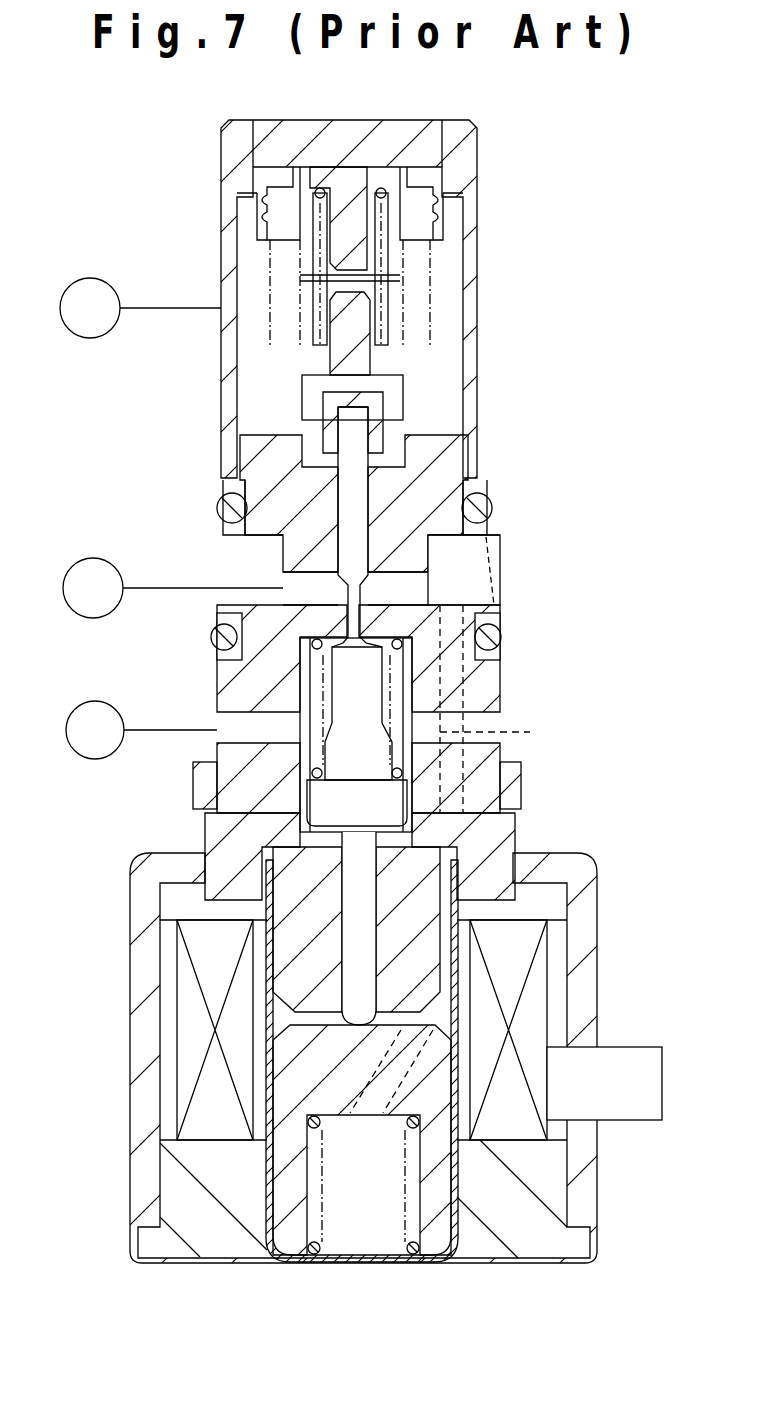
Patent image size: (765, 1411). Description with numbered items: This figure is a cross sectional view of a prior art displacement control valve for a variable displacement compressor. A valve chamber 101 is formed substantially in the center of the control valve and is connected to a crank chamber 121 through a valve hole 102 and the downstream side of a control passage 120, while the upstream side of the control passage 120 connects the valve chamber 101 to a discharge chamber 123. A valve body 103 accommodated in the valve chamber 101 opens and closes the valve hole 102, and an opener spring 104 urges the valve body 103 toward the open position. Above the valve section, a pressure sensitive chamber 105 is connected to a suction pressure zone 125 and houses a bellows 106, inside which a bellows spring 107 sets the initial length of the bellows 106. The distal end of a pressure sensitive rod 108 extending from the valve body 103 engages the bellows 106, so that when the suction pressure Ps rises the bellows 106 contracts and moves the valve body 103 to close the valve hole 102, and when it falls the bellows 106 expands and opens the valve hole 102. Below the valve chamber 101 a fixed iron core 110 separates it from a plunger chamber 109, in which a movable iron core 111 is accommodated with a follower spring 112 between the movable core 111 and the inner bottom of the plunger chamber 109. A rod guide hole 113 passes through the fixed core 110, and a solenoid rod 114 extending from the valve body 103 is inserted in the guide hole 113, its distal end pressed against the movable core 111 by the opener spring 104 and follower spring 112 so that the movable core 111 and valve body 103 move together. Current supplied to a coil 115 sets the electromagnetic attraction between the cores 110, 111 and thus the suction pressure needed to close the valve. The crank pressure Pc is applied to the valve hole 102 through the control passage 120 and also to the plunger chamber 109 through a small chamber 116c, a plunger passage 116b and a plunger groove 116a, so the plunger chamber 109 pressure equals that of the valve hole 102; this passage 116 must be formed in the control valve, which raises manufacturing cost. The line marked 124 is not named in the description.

The valve chamber 101 is at (395, 705).
The valve hole 102 is at (376, 592).
The valve body 103 is at (447, 836).
The opener spring 104 is at (312, 765).
The pressure sensitive chamber 105 is at (443, 262).
The bellows 106 is at (420, 362).
The bellows spring 107 is at (300, 362).
The pressure sensitive rod 108 is at (352, 488).
The plunger chamber 109 is at (360, 1226).
The fixed iron core 110 is at (282, 914).
The movable iron core 111 is at (295, 1097).
The follower spring 112 is at (401, 1120).
The rod guide hole 113 is at (356, 906).
The solenoid rod 114 is at (367, 953).
The coil 115 is at (532, 1020).
The passage 116 is at (482, 575).
The plunger groove 116a is at (428, 876).
The plunger passage 116b is at (470, 733).
The small chamber 116c is at (455, 540).
The control passage 120 is at (170, 728).
The crank chamber 121 is at (93, 558).
The discharge chamber 123 is at (95, 701).
The suction pressure line 124 is at (165, 310).
The suction pressure zone 125 is at (90, 278).